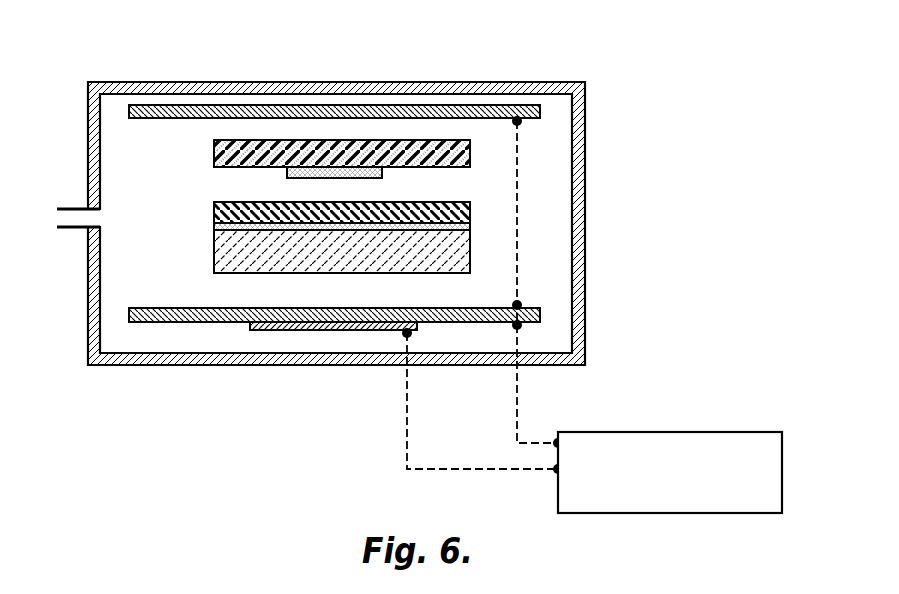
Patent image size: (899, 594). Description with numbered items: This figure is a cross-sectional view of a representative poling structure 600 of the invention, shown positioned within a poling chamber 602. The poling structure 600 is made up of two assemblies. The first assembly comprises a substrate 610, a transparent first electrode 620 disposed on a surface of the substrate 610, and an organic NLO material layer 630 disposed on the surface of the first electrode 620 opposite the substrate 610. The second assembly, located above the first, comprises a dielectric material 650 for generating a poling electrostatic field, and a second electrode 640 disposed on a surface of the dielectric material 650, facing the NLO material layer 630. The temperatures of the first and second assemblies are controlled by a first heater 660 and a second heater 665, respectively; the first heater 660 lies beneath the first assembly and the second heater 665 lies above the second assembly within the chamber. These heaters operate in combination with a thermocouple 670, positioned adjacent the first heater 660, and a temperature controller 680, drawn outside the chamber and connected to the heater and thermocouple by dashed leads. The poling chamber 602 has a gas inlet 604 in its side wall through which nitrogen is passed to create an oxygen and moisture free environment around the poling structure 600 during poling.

The poling structure 600 is at (504, 94).
The poling chamber 602 is at (311, 365).
The gas inlet 604 is at (67, 218).
The substrate 610 is at (214, 256).
The transparent first electrode 620 is at (214, 226).
The organic NLO material layer 630 is at (214, 203).
The second electrode 640 is at (383, 172).
The dielectric material 650 is at (214, 153).
The first heater 660 is at (190, 310).
The second heater 665 is at (188, 110).
The thermocouple 670 is at (250, 327).
The temperature controller 680 is at (782, 458).